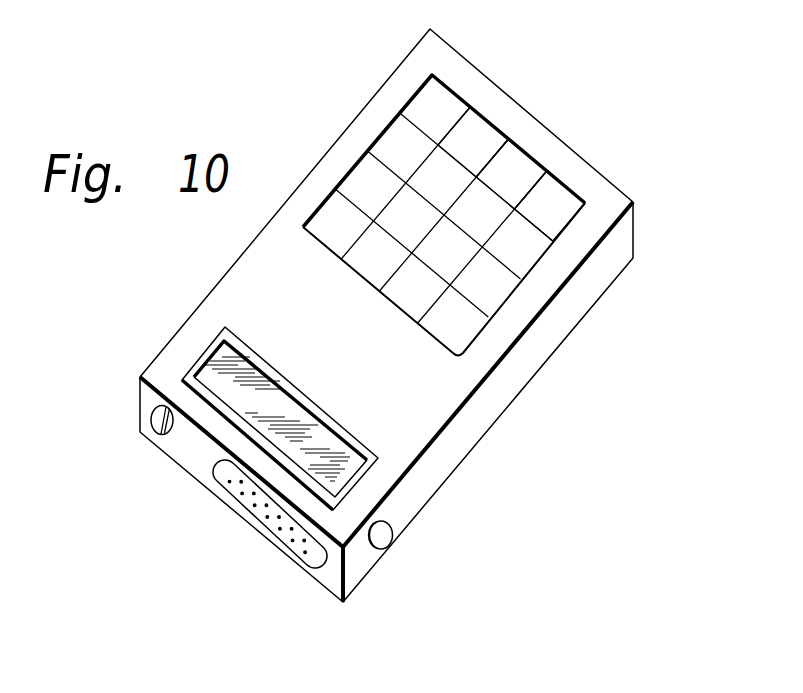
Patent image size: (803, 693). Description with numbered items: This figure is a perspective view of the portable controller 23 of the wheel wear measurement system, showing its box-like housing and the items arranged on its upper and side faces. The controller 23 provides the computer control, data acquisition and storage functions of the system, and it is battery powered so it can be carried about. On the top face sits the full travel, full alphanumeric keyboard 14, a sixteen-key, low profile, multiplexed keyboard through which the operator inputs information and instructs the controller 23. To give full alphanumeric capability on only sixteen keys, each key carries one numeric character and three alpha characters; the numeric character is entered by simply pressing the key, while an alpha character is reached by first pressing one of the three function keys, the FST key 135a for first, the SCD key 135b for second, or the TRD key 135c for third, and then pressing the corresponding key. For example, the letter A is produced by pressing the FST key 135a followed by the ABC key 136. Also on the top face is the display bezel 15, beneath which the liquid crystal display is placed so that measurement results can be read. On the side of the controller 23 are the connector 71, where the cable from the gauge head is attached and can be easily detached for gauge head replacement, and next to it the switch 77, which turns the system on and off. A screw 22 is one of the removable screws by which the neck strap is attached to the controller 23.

The keyboard 14 is at (327, 209).
The display bezel 15 is at (208, 343).
The screw 22 is at (392, 542).
The controller 23 is at (563, 139).
The connector 71 is at (263, 513).
The switch 77 is at (153, 433).
The FST key 135a is at (567, 203).
The SCD key 135b is at (533, 174).
The TRD key 135c is at (492, 136).
The ABC key 136 is at (466, 364).